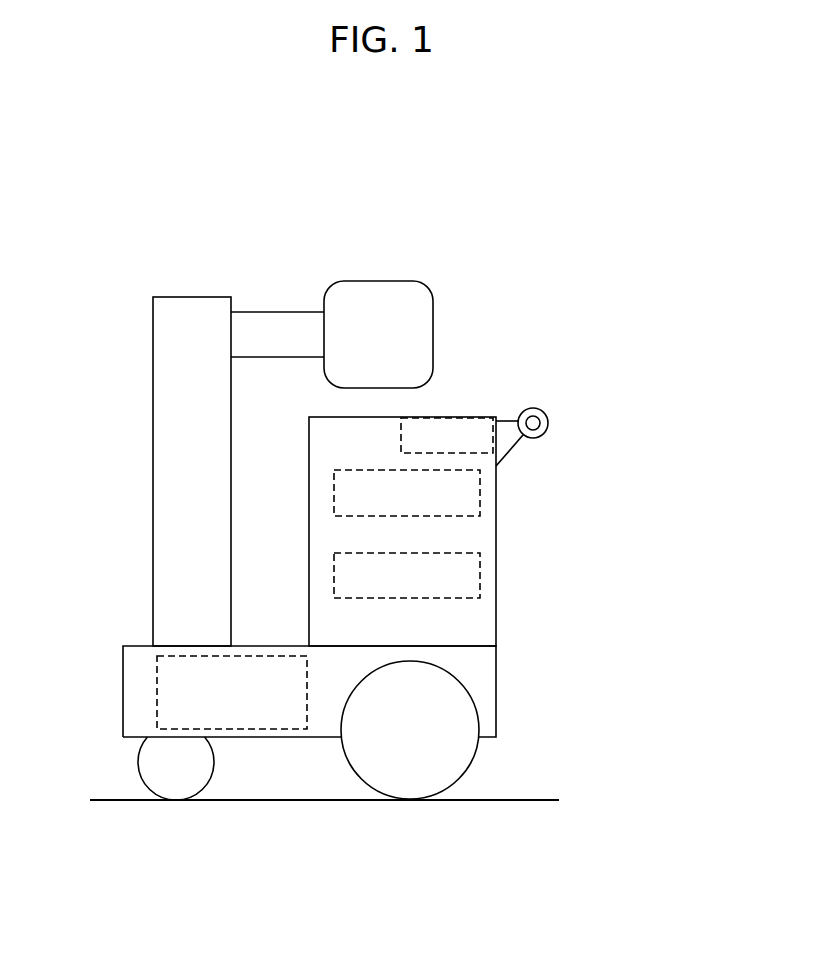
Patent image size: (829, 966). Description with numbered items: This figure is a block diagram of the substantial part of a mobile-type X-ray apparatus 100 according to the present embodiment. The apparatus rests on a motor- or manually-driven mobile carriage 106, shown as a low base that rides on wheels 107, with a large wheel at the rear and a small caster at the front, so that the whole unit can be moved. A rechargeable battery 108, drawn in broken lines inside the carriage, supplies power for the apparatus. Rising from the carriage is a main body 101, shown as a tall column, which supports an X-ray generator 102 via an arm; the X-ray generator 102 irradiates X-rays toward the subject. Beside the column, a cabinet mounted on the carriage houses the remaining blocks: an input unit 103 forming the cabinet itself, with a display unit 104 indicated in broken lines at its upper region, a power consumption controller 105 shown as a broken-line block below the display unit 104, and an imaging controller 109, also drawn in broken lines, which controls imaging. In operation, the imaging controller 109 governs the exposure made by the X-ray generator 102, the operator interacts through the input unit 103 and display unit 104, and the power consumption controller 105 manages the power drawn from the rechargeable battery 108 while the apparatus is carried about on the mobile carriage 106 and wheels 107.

The mobile-type X-ray apparatus 100 is at (253, 892).
The main body 101 is at (248, 429).
The X-ray generator 102 is at (442, 300).
The input unit 103 is at (473, 463).
The display unit 104 is at (528, 389).
The power consumption controller 105 is at (496, 504).
The mobile carriage 106 is at (391, 668).
The wheels 107 is at (500, 730).
The rechargeable battery 108 is at (408, 775).
The imaging controller 109 is at (496, 574).